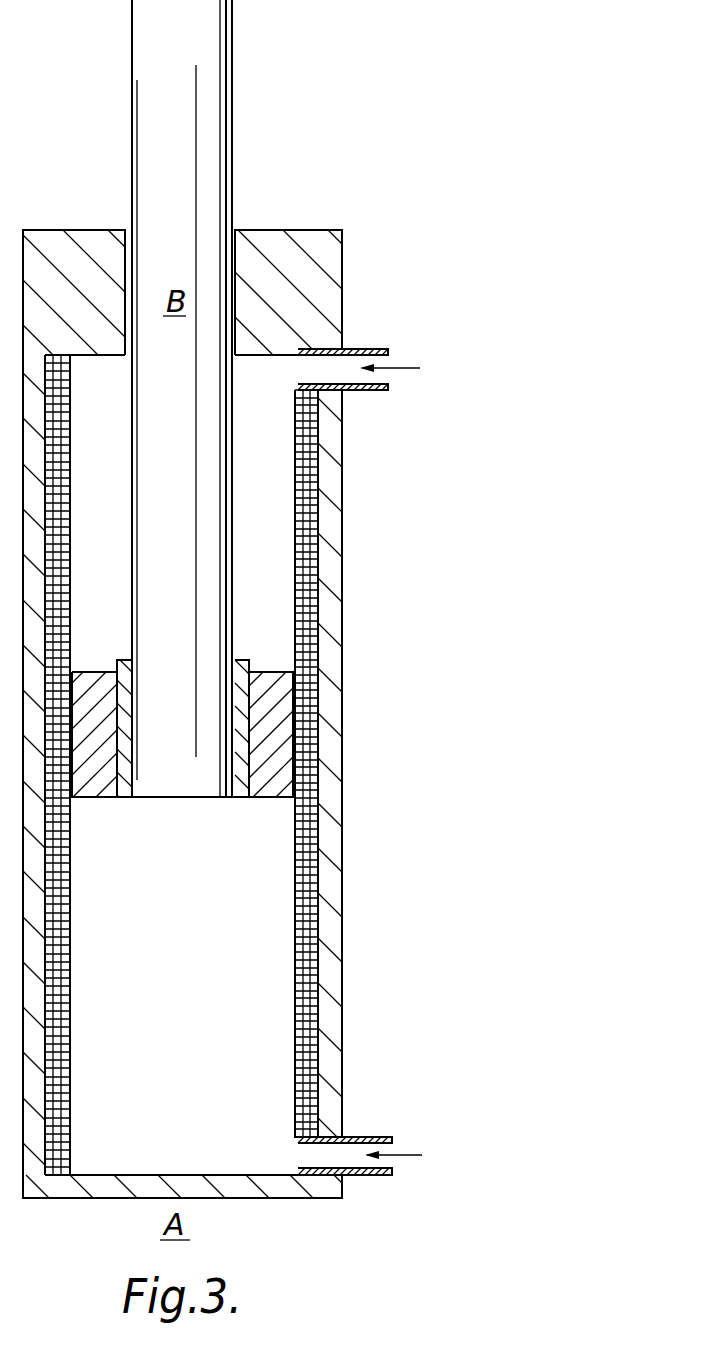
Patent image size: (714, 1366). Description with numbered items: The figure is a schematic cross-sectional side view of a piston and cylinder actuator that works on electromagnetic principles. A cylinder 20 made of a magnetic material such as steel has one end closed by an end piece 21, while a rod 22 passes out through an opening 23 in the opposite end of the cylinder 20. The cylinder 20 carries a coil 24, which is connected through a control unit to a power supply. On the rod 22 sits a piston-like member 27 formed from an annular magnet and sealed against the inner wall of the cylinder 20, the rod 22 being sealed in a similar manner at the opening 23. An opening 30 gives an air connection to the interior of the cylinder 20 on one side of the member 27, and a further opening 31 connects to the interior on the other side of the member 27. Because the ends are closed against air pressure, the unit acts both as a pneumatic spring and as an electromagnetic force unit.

The cylinder 20 is at (333, 938).
The end piece 21 is at (268, 1198).
The rod 22 is at (145, 48).
The opening 23 is at (127, 226).
The coil 24 is at (308, 575).
The piston-like member 27 is at (282, 743).
The opening 30 is at (380, 390).
The further opening 31 is at (363, 1137).